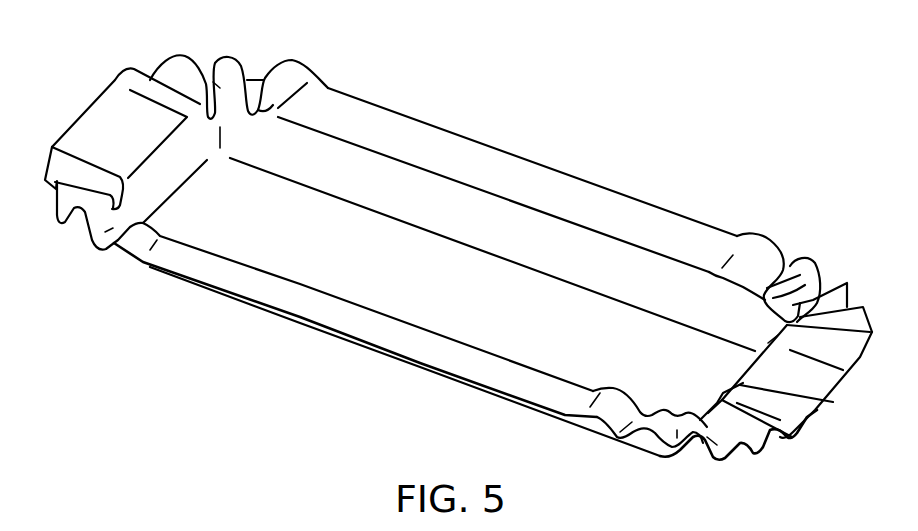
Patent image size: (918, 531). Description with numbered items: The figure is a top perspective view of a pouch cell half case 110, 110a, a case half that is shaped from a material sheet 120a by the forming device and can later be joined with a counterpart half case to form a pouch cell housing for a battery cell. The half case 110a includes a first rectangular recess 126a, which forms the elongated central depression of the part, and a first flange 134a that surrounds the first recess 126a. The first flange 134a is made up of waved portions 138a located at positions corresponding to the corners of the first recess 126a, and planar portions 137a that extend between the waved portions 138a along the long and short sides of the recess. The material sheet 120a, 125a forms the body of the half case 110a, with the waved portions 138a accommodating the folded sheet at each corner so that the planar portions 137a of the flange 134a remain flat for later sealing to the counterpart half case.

The pouch cell half case 110 is at (461, 246).
The pouch cell half case 110a is at (461, 246).
The material sheet 120a is at (569, 194).
The rail 125a is at (684, 225).
The first rectangular recess 126a is at (552, 288).
The first flange 134a is at (273, 300).
The planar portions 137a is at (97, 117).
The waved portions 138a is at (230, 62).